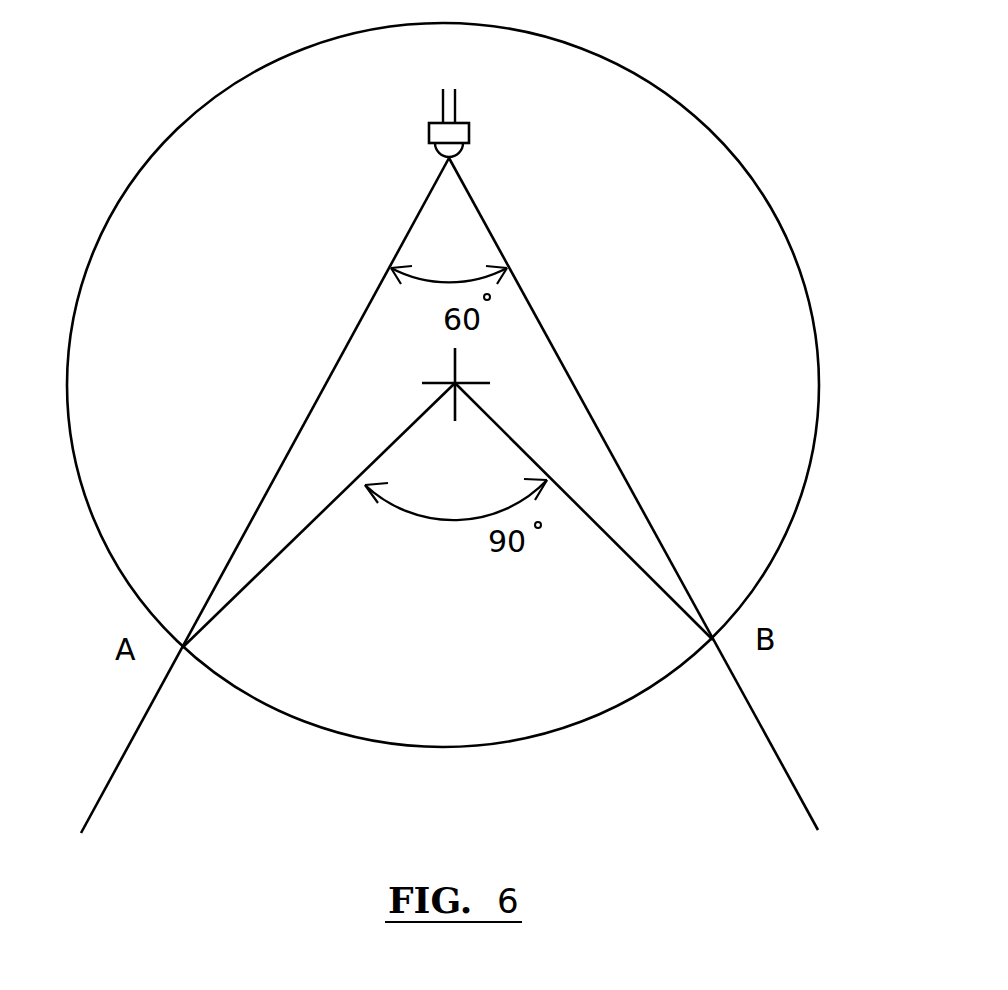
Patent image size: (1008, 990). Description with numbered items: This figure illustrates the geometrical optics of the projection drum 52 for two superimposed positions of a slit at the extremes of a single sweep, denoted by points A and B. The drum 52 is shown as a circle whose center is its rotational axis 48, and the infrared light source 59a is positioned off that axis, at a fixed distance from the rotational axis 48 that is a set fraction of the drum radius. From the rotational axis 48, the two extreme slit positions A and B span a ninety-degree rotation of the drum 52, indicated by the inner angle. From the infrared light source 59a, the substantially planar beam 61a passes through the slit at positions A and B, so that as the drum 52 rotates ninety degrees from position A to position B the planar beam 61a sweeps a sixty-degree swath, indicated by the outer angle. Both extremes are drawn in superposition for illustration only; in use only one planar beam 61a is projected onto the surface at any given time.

The drum 52 is at (703, 121).
The infrared light source 59a is at (484, 123).
The planar beam 61a is at (146, 737).
The rotational axis 48 is at (458, 380).